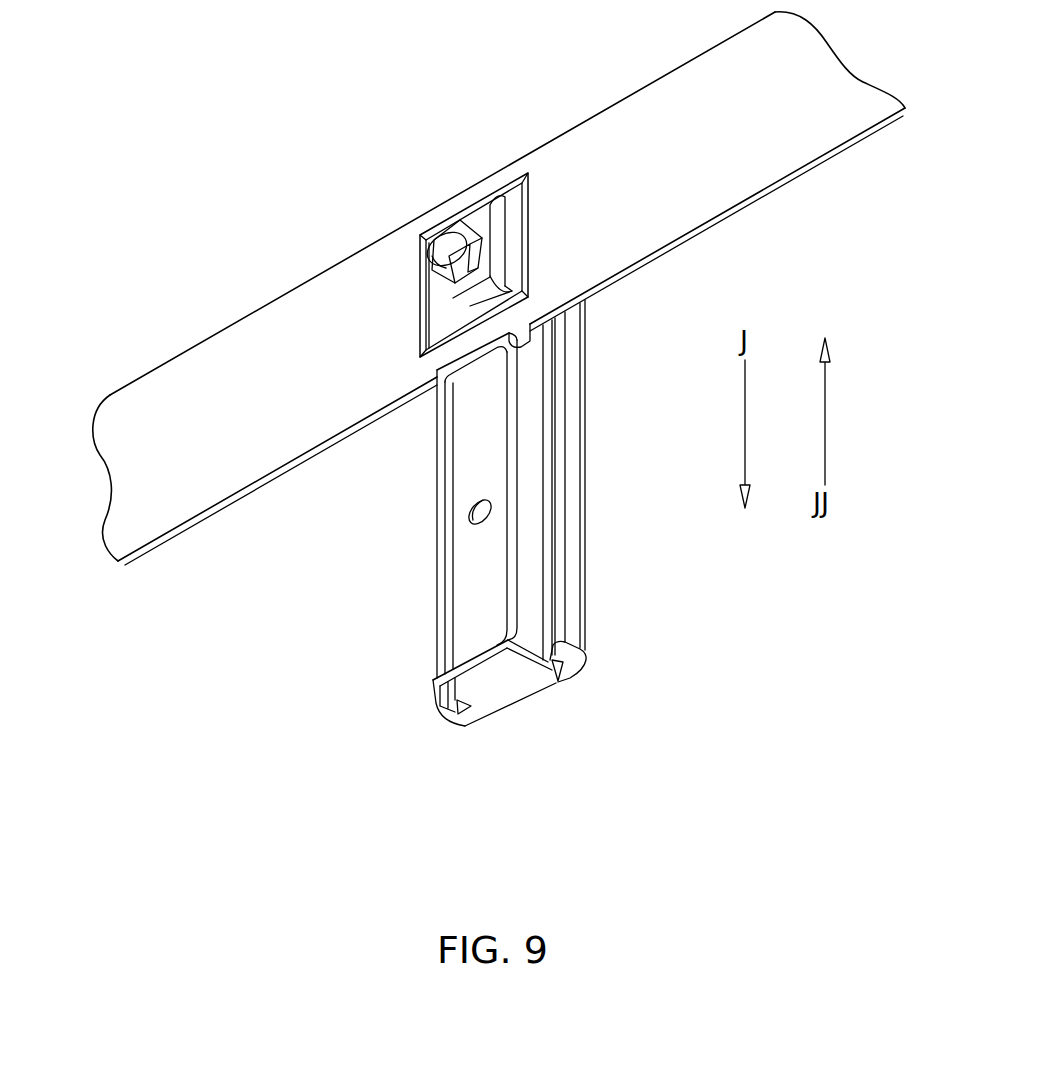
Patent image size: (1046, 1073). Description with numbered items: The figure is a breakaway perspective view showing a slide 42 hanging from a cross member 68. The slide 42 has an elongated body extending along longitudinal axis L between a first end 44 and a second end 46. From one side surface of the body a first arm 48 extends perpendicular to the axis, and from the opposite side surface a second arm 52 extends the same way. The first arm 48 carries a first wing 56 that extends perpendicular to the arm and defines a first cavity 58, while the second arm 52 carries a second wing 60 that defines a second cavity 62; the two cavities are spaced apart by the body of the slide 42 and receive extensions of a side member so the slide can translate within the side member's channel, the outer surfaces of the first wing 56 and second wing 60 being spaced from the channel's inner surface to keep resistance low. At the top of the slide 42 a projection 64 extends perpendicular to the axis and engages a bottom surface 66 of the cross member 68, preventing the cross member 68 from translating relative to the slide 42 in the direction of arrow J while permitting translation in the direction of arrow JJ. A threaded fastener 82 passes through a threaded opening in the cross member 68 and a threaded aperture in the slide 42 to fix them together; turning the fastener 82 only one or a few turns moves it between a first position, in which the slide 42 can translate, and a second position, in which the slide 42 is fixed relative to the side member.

The first end 44 is at (588, 125).
The cross member 68 is at (275, 313).
The threaded fastener 82 is at (442, 242).
The projection 64 is at (493, 357).
The bottom surface 66 is at (562, 325).
The second wing 60 is at (433, 688).
The slide 42 is at (467, 516).
The first wing 56 is at (573, 623).
The second end 46 is at (528, 690).
The second arm 52 is at (482, 728).
The second cavity 62 is at (460, 712).
The first arm 48 is at (565, 668).
The first cavity 58 is at (560, 677).